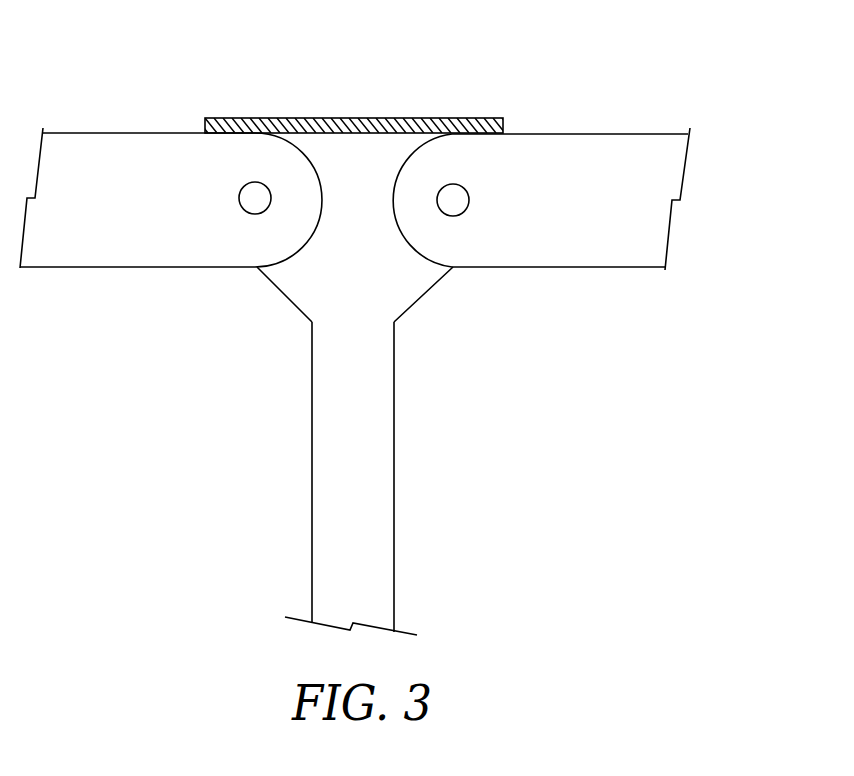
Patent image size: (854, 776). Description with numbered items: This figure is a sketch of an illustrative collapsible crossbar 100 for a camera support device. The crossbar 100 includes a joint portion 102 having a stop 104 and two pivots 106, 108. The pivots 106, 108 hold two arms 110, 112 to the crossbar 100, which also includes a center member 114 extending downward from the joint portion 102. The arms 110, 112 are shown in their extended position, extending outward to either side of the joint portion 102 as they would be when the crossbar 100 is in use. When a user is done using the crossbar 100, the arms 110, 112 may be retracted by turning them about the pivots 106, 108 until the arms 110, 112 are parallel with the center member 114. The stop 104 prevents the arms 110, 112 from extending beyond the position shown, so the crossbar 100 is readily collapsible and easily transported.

The crossbar 100 is at (459, 84).
The joint portion 102 is at (313, 272).
The stop 104 is at (258, 130).
The pivot 106 is at (245, 183).
The pivot 108 is at (455, 216).
The arm 110 is at (135, 250).
The arm 112 is at (598, 253).
The center member 114 is at (322, 413).